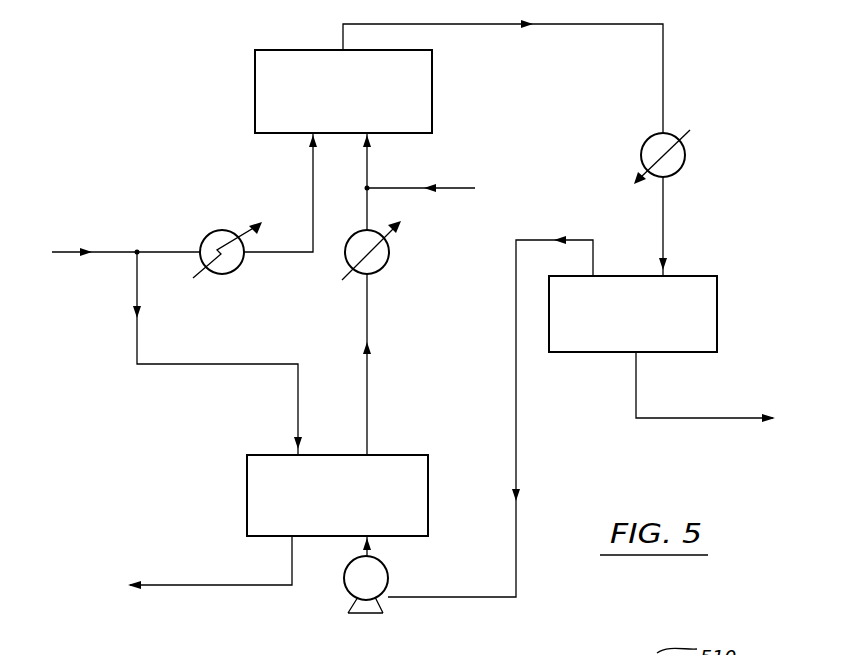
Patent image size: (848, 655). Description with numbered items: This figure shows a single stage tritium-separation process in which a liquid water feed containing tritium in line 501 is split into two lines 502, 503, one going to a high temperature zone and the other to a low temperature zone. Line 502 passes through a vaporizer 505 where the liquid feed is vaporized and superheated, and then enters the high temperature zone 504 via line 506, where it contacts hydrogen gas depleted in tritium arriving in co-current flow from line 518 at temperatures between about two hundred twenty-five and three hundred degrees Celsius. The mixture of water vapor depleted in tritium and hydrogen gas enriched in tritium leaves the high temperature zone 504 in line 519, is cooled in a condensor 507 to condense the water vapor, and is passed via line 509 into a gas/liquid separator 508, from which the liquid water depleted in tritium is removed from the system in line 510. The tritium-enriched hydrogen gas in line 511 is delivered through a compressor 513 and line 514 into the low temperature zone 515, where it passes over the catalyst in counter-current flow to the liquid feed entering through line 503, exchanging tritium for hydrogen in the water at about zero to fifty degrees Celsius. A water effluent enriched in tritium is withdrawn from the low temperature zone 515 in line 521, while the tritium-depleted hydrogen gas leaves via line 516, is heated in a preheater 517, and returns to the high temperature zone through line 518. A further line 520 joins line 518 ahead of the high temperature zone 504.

The feed line 501 is at (67, 250).
The feed split line 502 is at (170, 250).
The feed split line 503 is at (197, 364).
The high temperature zone 504 is at (255, 78).
The vaporizer 505 is at (240, 231).
The vaporized feed line 506 is at (313, 181).
The condensor 507 is at (686, 165).
The gas/liquid separator 508 is at (717, 323).
The separator feed line 509 is at (663, 235).
The depleted water line 510 is at (705, 418).
The enriched hydrogen line 511 is at (538, 240).
The compressor 513 is at (378, 603).
The compressor discharge line 514 is at (375, 557).
The low temperature zone 515 is at (247, 505).
The depleted hydrogen line 516 is at (368, 397).
The preheater 517 is at (385, 265).
The heated hydrogen line 518 is at (370, 209).
The high temperature zone effluent line 519 is at (663, 75).
The make-up line 520 is at (462, 188).
The enriched water effluent line 521 is at (190, 585).